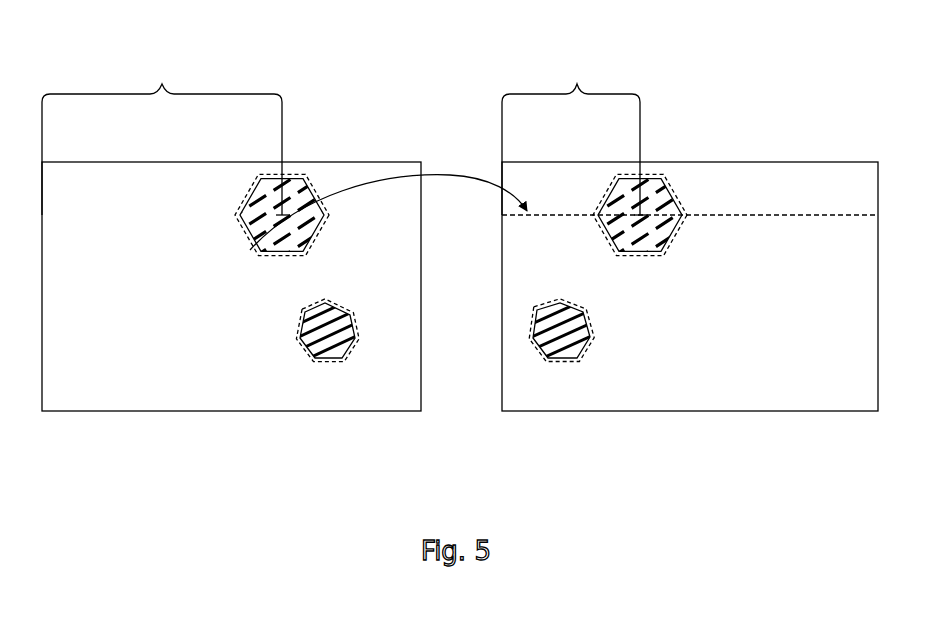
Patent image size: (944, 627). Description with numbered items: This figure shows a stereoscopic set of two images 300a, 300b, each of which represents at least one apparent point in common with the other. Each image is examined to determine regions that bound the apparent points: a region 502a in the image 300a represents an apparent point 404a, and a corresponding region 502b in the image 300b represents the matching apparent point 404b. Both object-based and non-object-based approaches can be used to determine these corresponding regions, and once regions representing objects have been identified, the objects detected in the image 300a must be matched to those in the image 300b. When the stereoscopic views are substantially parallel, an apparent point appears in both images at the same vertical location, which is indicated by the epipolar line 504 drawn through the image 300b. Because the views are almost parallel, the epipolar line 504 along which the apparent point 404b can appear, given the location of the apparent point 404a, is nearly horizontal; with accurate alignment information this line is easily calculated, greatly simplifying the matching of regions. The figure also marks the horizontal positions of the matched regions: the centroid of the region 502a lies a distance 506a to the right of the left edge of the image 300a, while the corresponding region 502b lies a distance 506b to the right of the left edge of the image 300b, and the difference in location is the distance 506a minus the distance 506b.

The image 300a is at (334, 167).
The image 300b is at (835, 178).
The apparent point 404a is at (283, 213).
The apparent point 404b is at (640, 218).
The region 502a is at (324, 215).
The region 502b is at (665, 252).
The epipolar line 504 is at (732, 215).
The distance 506a is at (162, 135).
The distance 506b is at (571, 131).